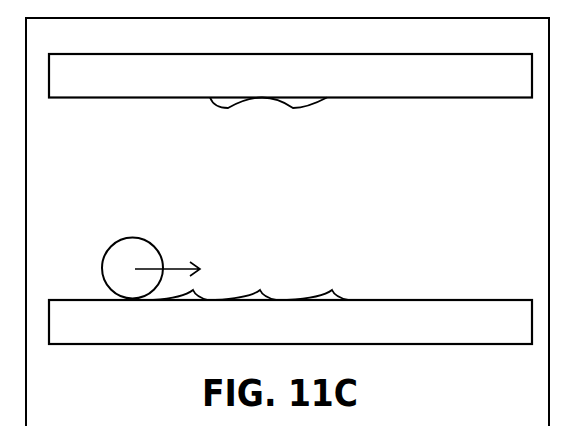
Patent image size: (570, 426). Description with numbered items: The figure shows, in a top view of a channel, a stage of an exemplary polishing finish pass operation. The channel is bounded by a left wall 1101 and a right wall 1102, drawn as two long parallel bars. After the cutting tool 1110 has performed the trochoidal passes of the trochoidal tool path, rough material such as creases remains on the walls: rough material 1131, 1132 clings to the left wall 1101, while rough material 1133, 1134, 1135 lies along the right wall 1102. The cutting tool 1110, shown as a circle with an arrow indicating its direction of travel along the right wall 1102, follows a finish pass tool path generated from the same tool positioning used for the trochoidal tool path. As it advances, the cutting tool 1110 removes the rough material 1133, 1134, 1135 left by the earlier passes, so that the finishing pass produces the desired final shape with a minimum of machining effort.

The left wall 1101 is at (532, 37).
The right wall 1102 is at (522, 325).
The cutting tool 1110 is at (115, 242).
The rough material 1131 is at (225, 105).
The rough material 1132 is at (322, 122).
The rough material 1133 is at (205, 299).
The rough material 1134 is at (235, 299).
The rough material 1135 is at (340, 296).